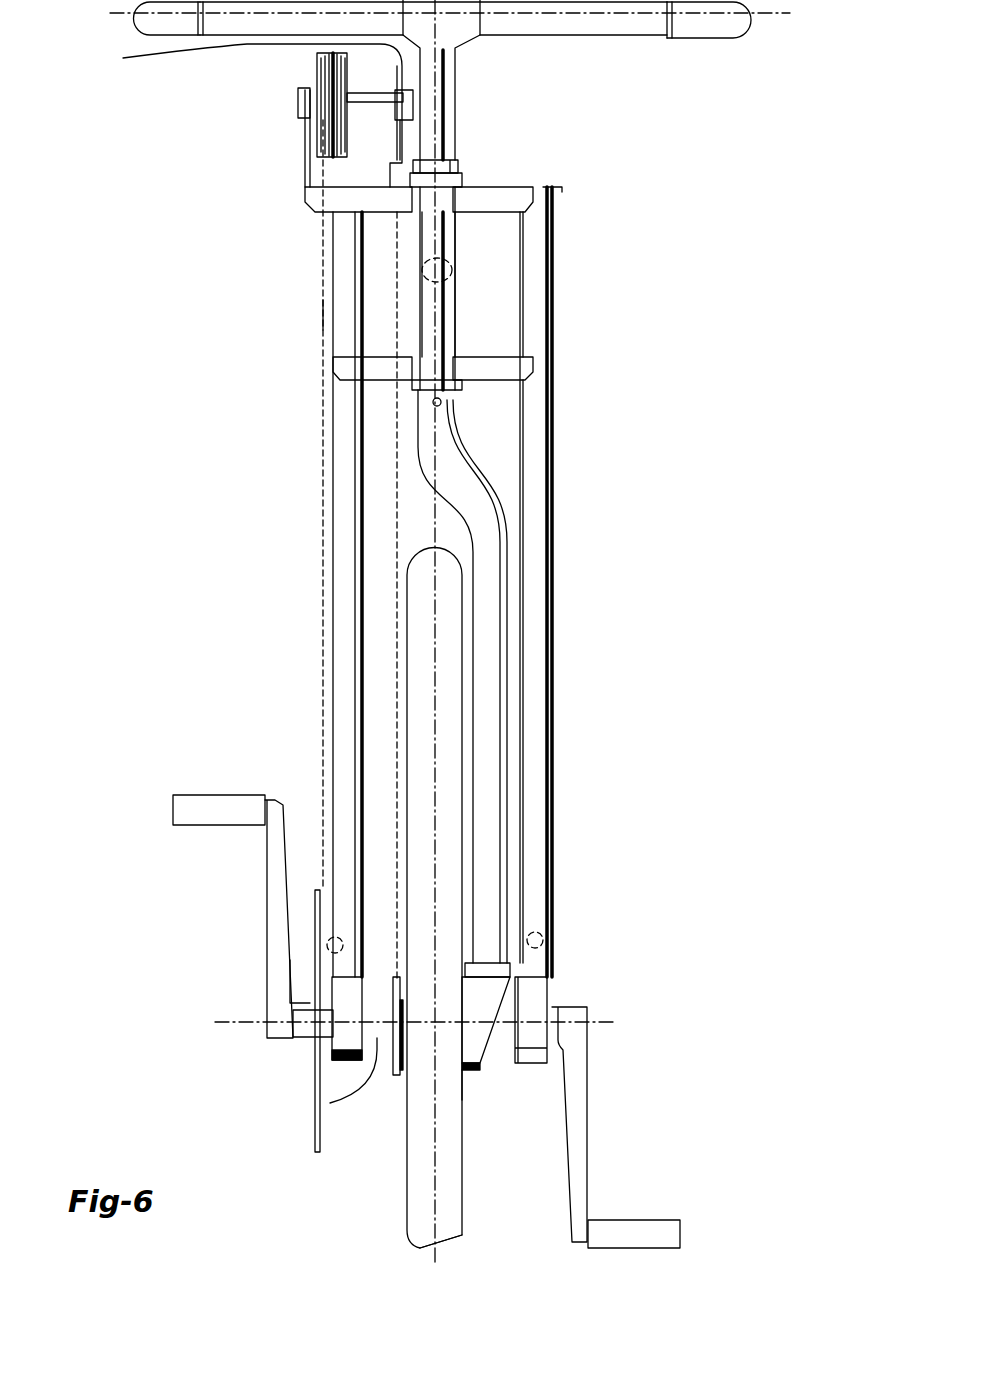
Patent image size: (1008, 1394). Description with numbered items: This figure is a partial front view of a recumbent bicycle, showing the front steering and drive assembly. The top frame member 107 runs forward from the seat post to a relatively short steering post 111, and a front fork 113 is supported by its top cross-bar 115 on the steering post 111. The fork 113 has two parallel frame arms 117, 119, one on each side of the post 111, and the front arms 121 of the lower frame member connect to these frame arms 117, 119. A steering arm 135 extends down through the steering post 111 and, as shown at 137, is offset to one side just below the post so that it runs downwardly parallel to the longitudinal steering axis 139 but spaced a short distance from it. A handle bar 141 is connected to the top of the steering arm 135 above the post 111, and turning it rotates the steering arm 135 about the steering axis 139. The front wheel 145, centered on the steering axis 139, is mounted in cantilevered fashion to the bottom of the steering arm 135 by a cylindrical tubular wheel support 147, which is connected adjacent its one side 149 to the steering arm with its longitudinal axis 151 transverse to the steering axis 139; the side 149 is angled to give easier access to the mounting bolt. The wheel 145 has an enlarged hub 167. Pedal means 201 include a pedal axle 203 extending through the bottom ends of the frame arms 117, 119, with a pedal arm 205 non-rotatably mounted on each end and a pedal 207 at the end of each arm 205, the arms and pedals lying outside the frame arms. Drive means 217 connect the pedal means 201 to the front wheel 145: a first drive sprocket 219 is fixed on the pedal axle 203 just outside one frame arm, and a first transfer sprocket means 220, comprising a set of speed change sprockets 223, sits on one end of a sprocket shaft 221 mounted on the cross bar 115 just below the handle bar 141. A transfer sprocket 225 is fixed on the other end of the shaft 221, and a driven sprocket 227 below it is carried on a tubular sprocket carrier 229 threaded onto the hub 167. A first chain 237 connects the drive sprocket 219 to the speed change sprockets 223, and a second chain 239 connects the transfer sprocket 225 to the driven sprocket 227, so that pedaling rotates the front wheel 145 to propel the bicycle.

The top frame member 107 is at (452, 262).
The steering post 111 is at (457, 322).
The front fork 113 is at (558, 240).
The top cross-bar 115 is at (500, 182).
The frame arm 117 is at (333, 438).
The frame arm 119 is at (554, 512).
The front arms of the lower frame member 121 is at (327, 945).
The steering arm 135 is at (460, 108).
The offset 137 is at (490, 488).
The steering axis 139 is at (420, 1252).
The handle bar 141 is at (610, 37).
The front wheel 145 is at (410, 580).
The wheel support 147 is at (490, 1064).
The one side of the wheel support 149 is at (507, 1000).
The longitudinal axis of the wheel support 151 is at (215, 1022).
The hub 167 is at (470, 1088).
The pedal means 201 is at (263, 967).
The pedal axle 203 is at (330, 1103).
The pedal arm 205 is at (265, 858).
The pedal 207 is at (195, 803).
The drive means 217 is at (322, 262).
The first drive sprocket 219 is at (318, 1075).
The first transfer sprocket means 220 is at (318, 152).
The sprocket shaft 221 is at (373, 117).
The speed change sprockets 223 is at (333, 68).
The transfer sprocket 225 is at (241, 115).
The driven sprocket 227 is at (395, 1077).
The sprocket carrier 229 is at (401, 1080).
The first chain 237 is at (322, 313).
The second chain 239 is at (397, 405).